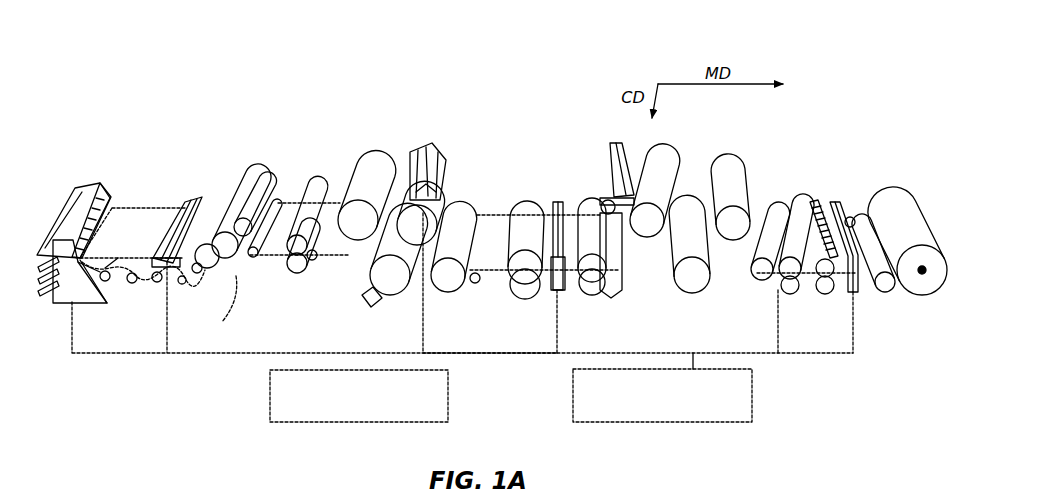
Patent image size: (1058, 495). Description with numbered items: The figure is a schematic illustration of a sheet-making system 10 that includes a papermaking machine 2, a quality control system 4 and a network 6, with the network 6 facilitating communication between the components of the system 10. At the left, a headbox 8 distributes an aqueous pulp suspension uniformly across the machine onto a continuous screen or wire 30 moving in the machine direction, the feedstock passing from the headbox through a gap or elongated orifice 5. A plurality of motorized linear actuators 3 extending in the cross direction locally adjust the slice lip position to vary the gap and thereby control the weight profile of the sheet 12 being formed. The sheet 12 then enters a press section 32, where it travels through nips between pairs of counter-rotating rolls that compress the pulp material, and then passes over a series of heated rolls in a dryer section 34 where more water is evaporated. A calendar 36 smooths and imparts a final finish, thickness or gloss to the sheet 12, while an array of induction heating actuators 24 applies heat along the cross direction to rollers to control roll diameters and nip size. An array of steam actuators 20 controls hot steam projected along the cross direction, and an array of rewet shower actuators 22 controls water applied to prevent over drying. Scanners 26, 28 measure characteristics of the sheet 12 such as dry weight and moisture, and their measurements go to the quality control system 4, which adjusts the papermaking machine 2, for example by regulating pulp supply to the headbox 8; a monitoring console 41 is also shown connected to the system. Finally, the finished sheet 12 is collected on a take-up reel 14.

The papermaking machine 2 is at (157, 122).
The headbox 8 is at (70, 213).
The linear actuators 3 is at (110, 202).
The screen or wire 30 is at (147, 207).
The gap or elongated orifice 5 is at (107, 303).
The sheet of paper material 12 is at (213, 208).
The steam actuators 20 is at (173, 278).
The press section 32 is at (254, 280).
The rewet shower actuators 22 is at (430, 140).
The scanner 26 is at (556, 204).
The induction heating actuators 24 is at (816, 200).
The scanner 28 is at (834, 200).
The take-up reel 14 is at (890, 192).
The dryer section 34 is at (669, 293).
The calendar 36 is at (816, 301).
The sheet-making system 10 is at (170, 379).
The monitoring console 41 is at (270, 397).
The network 6 is at (502, 353).
The quality control system 4 is at (752, 392).